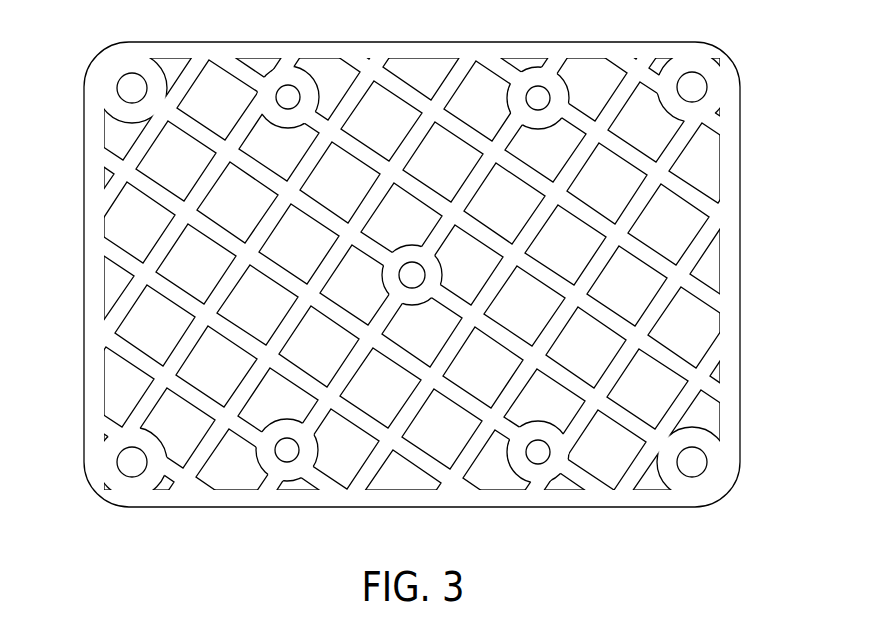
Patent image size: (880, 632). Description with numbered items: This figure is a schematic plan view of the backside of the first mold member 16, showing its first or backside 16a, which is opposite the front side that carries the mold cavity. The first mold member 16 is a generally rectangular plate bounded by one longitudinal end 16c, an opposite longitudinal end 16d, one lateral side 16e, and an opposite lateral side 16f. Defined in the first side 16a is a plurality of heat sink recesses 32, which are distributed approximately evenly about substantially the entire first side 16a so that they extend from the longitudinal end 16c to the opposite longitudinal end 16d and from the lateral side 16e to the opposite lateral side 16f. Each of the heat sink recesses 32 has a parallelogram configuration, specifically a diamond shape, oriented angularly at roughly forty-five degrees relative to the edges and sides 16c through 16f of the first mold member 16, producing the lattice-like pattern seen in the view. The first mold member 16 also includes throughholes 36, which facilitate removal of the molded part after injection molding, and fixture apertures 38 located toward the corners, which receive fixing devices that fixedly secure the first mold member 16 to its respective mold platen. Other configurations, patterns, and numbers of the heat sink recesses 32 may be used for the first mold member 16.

The first mold member 16 is at (420, 272).
The first or backside 16a is at (139, 58).
The longitudinal end 16c is at (740, 273).
The opposite longitudinal end 16d is at (83, 337).
The lateral side 16e is at (410, 509).
The opposite lateral side 16f is at (415, 43).
The heat sink recesses 32 is at (163, 148).
The throughholes 36 is at (289, 96).
The fixture apertures 38 is at (132, 88).